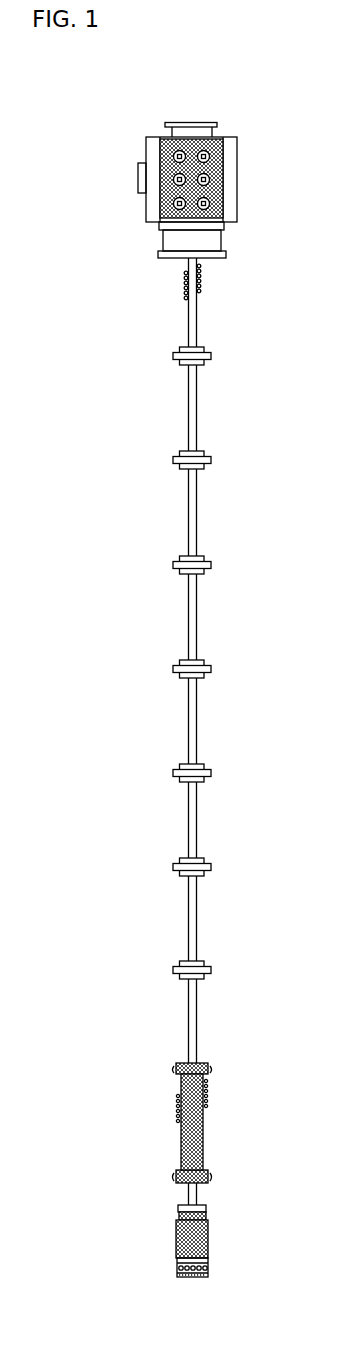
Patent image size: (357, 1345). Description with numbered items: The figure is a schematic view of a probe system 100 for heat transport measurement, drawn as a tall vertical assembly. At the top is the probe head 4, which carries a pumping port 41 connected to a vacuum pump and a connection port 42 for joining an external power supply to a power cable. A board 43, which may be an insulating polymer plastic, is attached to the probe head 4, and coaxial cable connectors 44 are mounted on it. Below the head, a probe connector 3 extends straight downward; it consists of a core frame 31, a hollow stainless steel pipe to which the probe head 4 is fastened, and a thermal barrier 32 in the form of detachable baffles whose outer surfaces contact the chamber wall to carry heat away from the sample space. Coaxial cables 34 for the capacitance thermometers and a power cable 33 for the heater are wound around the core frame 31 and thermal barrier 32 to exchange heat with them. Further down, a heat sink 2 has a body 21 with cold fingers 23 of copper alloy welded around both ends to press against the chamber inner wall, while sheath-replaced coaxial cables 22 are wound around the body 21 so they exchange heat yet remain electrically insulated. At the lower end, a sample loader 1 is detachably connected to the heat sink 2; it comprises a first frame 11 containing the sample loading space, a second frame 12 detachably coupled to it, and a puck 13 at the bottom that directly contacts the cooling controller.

The probe system 100 is at (84, 73).
The sample loader 1 is at (274, 1198).
The first frame 11 is at (178, 1213).
The second frame 12 is at (176, 1238).
The puck 13 is at (177, 1262).
The heat sink 2 is at (274, 1060).
The body 21 is at (182, 1140).
The coaxial cables 22 is at (178, 1108).
The cold fingers 23 is at (176, 1065).
The probe connector 3 is at (274, 262).
The core frame 31 is at (189, 518).
The thermal barrier 32 is at (177, 458).
The power cable 33 is at (183, 300).
The coaxial cables 34 is at (183, 285).
The probe head 4 is at (274, 122).
The pumping port 41 is at (171, 131).
The connection port 42 is at (140, 176).
The board 43 is at (163, 159).
The coaxial cable connectors 44 is at (177, 203).